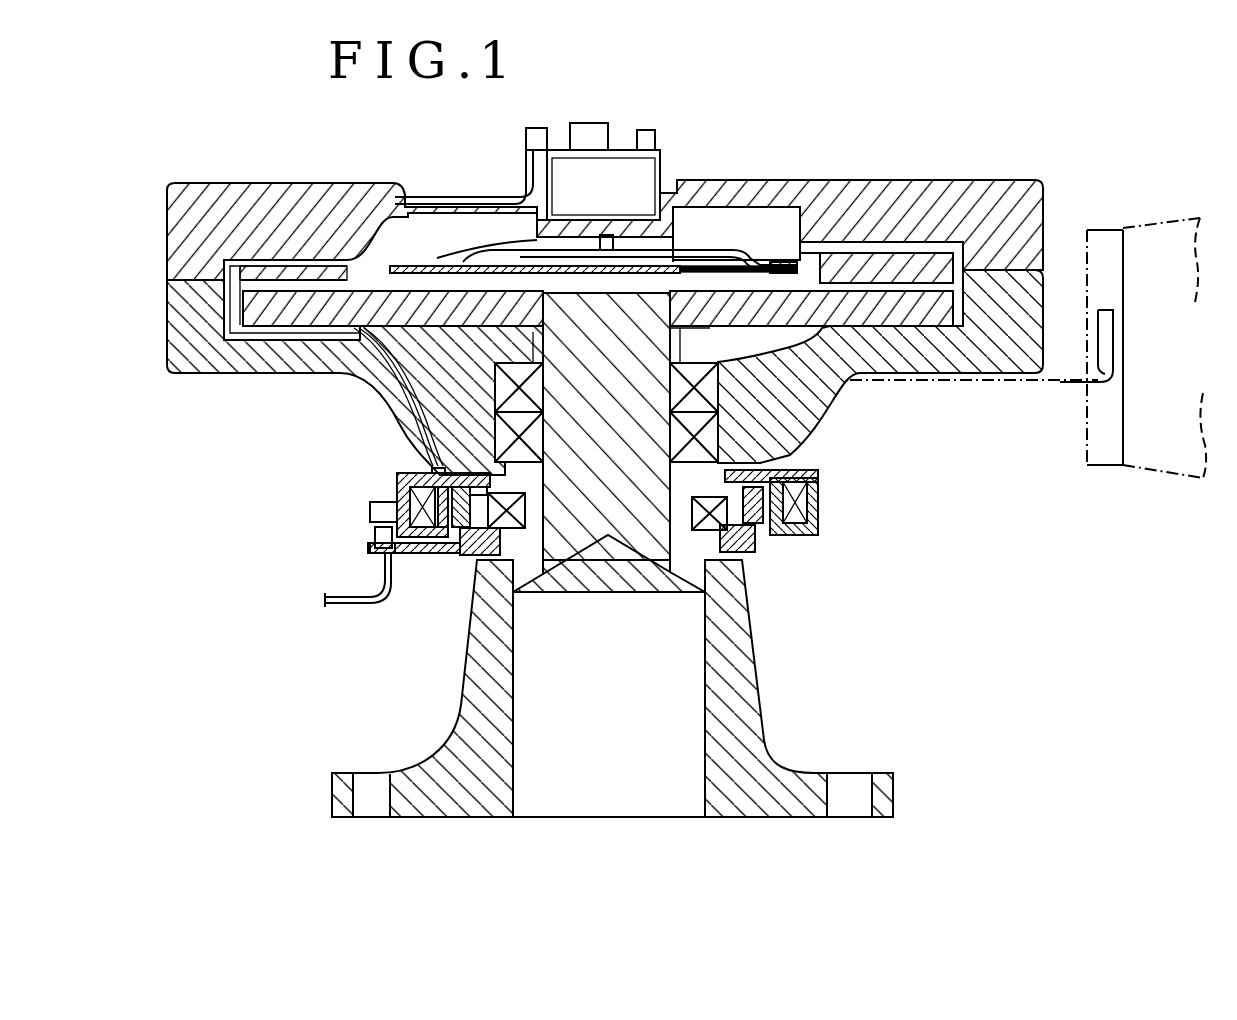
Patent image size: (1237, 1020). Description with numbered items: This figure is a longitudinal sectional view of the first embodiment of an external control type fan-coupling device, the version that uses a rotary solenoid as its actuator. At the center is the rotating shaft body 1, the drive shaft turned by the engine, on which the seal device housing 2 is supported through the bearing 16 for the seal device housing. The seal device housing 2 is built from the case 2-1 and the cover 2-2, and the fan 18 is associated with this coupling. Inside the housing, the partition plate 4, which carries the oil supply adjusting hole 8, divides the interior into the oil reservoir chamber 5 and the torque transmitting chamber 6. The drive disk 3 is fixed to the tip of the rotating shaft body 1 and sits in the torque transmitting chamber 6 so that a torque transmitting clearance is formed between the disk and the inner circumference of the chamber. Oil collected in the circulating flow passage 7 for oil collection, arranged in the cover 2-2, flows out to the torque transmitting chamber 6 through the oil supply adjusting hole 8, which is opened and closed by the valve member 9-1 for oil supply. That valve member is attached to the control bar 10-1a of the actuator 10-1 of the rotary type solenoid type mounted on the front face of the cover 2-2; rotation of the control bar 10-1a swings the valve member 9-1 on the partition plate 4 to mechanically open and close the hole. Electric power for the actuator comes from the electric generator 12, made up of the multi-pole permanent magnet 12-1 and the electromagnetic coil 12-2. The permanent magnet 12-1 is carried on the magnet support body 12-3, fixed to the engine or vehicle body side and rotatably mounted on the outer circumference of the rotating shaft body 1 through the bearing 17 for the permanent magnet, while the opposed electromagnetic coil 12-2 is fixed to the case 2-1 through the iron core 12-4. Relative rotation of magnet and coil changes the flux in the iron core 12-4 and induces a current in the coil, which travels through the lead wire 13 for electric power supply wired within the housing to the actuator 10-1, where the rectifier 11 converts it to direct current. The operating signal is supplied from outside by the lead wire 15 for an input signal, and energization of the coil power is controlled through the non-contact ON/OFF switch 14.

The rotating shaft body 1 is at (757, 688).
The seal device housing 2 is at (605, 267).
The case 2-1 is at (224, 362).
The cover 2-2 is at (305, 192).
The drive disk 3 is at (873, 298).
The partition plate 4 is at (482, 262).
The oil reservoir chamber 5 is at (750, 228).
The torque transmitting chamber 6 is at (827, 397).
The circulating flow passage for oil collection 7 is at (925, 247).
The oil supply adjusting hole 8 is at (778, 262).
The valve member for oil supply 9-1 is at (697, 250).
The actuator of the rotary type solenoid type 10-1 is at (620, 165).
The control bar 10-1a is at (537, 243).
The rectifier 11 is at (588, 123).
The electric generator 12 is at (595, 556).
The permanent magnet 12-1 is at (760, 523).
The electromagnetic coil 12-2 is at (818, 510).
The magnet support body 12-3 is at (747, 543).
The iron core 12-4 is at (817, 482).
The lead wire for electric power supply 13 is at (260, 260).
The ON/OFF switch 14 is at (373, 517).
The lead wire for an input signal 15 is at (327, 603).
The bearing for the seal device housing 16 is at (507, 440).
The bearing for the permanent magnet 17 is at (487, 580).
The fan 18 is at (1140, 478).